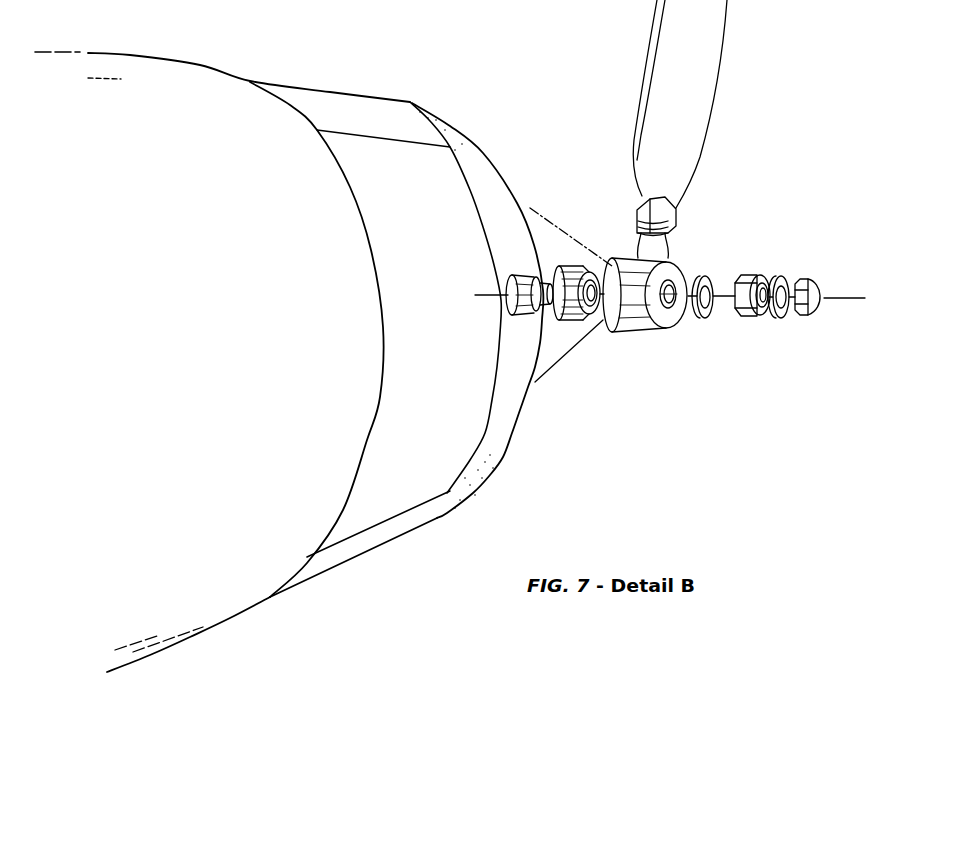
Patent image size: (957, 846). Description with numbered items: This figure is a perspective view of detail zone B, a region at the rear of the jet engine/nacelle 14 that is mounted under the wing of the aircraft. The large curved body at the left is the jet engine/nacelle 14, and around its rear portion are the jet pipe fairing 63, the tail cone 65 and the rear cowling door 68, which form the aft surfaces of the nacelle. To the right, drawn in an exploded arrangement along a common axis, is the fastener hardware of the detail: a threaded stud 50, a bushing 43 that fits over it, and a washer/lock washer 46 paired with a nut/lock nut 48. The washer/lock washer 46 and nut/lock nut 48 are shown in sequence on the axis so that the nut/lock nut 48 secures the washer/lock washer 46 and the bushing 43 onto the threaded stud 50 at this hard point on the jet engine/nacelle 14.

The jet engine/nacelle 14 is at (130, 80).
The bushing 43 is at (558, 262).
The washer/lock washer 46 is at (781, 276).
The nut/lock nut 48 is at (805, 320).
The threaded stud 50 is at (545, 318).
The jet pipe fairing 63 is at (447, 513).
The tail cone 65 is at (553, 365).
The rear cowling door 68 is at (364, 493).